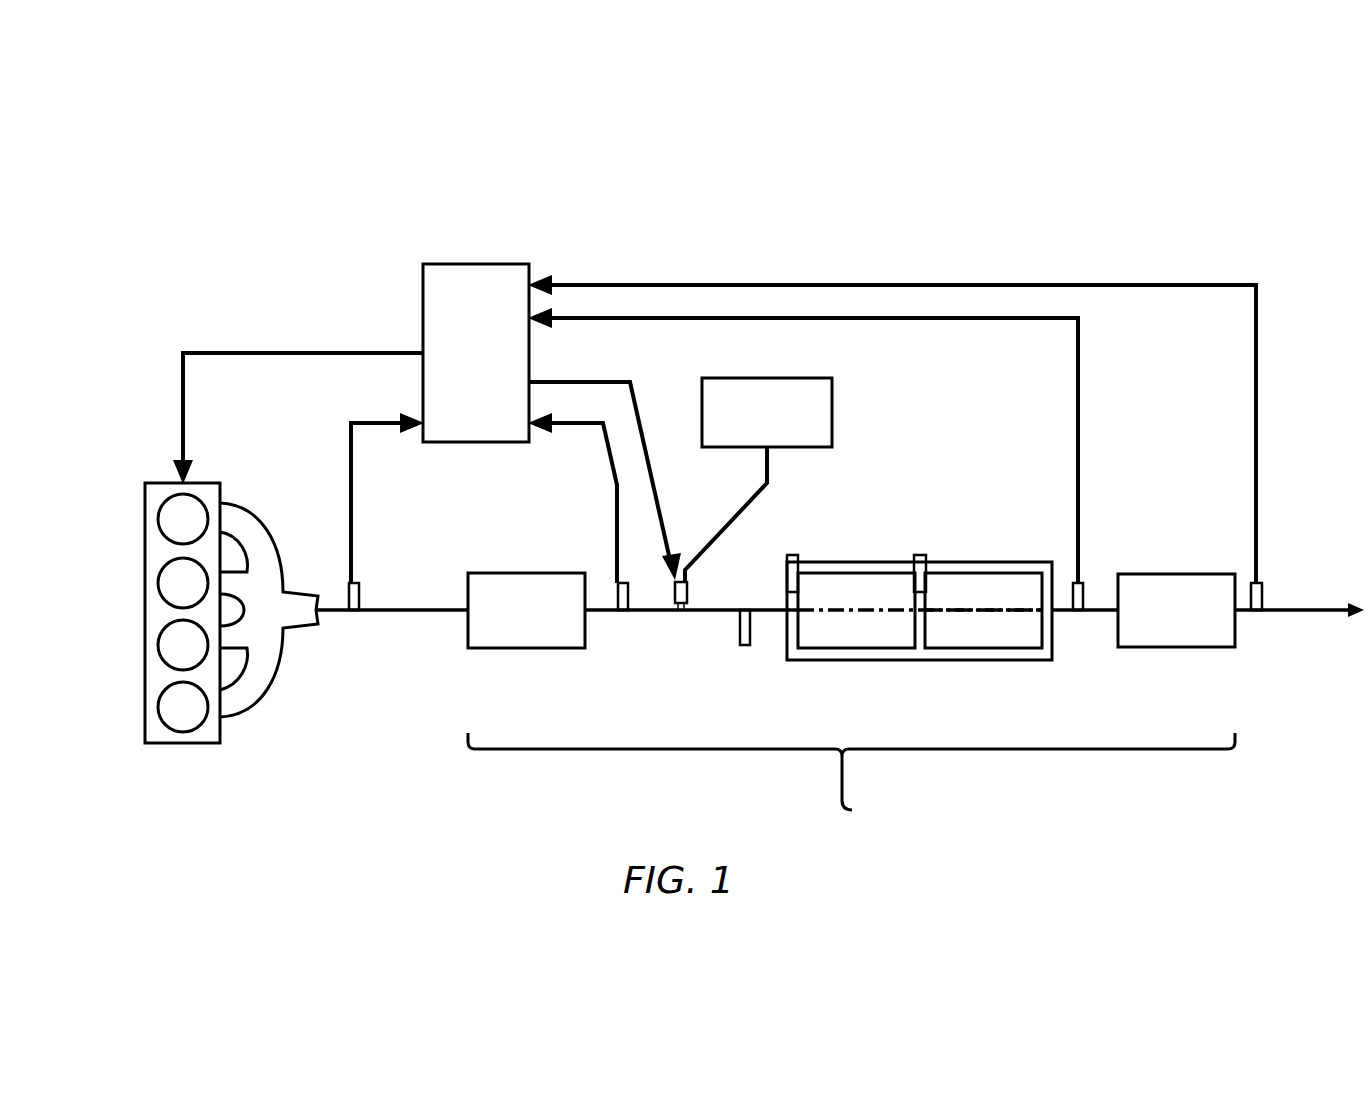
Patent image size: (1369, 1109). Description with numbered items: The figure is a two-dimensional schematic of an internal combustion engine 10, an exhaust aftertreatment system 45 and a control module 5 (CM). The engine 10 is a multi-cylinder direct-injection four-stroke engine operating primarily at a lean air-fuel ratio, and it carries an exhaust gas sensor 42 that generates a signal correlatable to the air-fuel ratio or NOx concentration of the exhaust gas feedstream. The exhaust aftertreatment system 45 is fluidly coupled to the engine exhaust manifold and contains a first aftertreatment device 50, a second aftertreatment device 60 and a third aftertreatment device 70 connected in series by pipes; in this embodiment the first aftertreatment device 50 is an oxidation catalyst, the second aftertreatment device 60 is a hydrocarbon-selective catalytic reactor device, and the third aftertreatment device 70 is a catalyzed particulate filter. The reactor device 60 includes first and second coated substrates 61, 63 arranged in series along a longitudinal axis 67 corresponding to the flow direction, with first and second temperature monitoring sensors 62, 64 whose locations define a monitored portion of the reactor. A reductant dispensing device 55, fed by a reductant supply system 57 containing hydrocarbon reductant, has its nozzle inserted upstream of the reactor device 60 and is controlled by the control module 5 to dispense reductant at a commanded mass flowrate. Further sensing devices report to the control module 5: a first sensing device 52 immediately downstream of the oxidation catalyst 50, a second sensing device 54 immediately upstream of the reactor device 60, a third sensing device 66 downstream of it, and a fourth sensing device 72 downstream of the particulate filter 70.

The control module 5 is at (714, 423).
The internal combustion engine 10 is at (155, 478).
The exhaust gas sensor 42 is at (360, 599).
The exhaust aftertreatment system 45 is at (851, 790).
The first aftertreatment device 50 is at (526, 610).
The first sensing device 52 is at (628, 595).
The second sensing device 54 is at (738, 630).
The reductant dispensing device 55 is at (688, 590).
The reductant supply system 57 is at (832, 400).
The second aftertreatment device 60 is at (1052, 562).
The first coated substrate 61 is at (856, 610).
The first temperature monitoring sensor 62 is at (800, 560).
The second coated substrate 63 is at (983, 610).
The second temperature monitoring sensor 64 is at (930, 560).
The third sensing device 66 is at (1084, 597).
The longitudinal axis 67 is at (972, 610).
The third aftertreatment device 70 is at (1176, 610).
The fourth sensing device 72 is at (1263, 597).